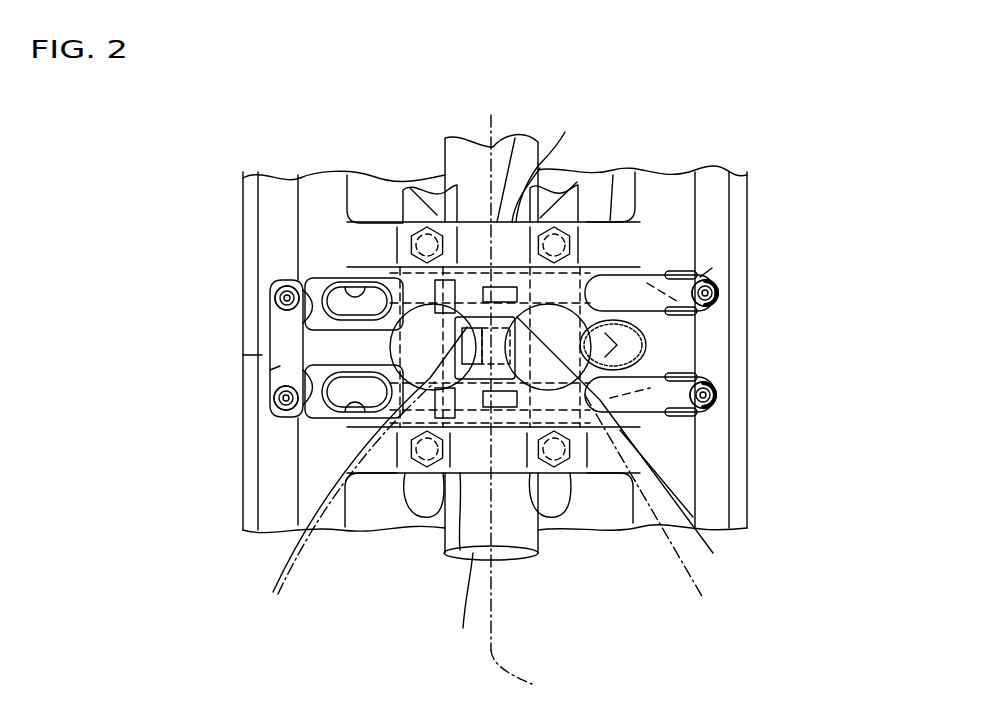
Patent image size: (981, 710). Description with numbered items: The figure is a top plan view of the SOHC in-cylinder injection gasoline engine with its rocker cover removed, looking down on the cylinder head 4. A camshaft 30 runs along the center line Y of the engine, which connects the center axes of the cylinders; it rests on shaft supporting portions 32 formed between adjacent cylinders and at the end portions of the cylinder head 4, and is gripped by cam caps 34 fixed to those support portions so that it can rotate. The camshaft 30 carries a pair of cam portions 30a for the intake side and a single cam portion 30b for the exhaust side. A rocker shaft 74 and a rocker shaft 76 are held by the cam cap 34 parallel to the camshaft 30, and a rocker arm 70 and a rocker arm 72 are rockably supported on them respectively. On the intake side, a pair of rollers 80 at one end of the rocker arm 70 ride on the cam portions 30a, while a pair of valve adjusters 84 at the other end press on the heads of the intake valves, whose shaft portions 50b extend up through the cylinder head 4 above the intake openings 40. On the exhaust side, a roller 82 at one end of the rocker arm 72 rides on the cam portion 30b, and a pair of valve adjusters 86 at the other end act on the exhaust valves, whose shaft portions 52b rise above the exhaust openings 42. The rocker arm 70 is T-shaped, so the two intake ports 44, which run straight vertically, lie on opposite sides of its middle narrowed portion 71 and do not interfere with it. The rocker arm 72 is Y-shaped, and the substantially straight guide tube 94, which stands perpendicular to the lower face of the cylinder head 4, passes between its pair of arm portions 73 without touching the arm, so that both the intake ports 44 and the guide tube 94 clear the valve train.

The cylinder head 4 is at (243, 528).
The camshaft 30 is at (512, 533).
The cam portion 30a is at (433, 222).
The cam portion 30b is at (661, 520).
The shaft supporting portion 32 is at (613, 177).
The cam cap 34 is at (525, 384).
The intake opening 40 is at (272, 623).
The exhaust opening 42 is at (744, 585).
The intake port 44 is at (340, 273).
The shaft portion 50b is at (219, 374).
The shaft portion 52b is at (772, 351).
The rocker arm 70 is at (262, 355).
The middle narrowed portion 71 is at (270, 370).
The rocker arm 72 is at (707, 273).
The arm portion 73 is at (650, 275).
The rocker shaft 74 is at (410, 535).
The rocker shaft 76 is at (553, 533).
The roller 80 is at (610, 600).
The roller 82 is at (460, 540).
The valve adjuster 84 is at (273, 297).
The valve adjuster 86 is at (718, 293).
The guide tube 94 is at (648, 333).
The center line Y is at (522, 676).